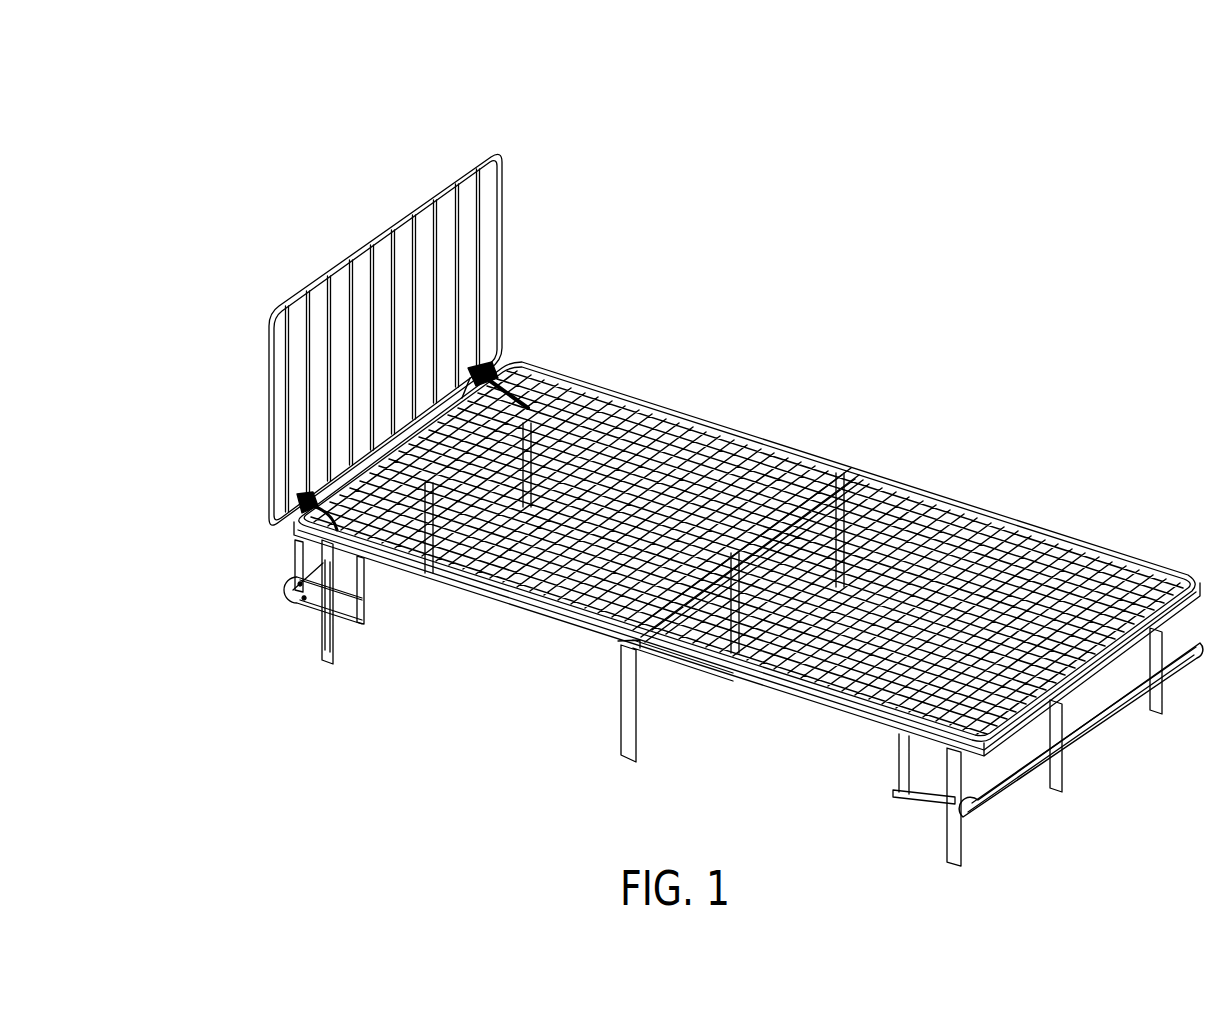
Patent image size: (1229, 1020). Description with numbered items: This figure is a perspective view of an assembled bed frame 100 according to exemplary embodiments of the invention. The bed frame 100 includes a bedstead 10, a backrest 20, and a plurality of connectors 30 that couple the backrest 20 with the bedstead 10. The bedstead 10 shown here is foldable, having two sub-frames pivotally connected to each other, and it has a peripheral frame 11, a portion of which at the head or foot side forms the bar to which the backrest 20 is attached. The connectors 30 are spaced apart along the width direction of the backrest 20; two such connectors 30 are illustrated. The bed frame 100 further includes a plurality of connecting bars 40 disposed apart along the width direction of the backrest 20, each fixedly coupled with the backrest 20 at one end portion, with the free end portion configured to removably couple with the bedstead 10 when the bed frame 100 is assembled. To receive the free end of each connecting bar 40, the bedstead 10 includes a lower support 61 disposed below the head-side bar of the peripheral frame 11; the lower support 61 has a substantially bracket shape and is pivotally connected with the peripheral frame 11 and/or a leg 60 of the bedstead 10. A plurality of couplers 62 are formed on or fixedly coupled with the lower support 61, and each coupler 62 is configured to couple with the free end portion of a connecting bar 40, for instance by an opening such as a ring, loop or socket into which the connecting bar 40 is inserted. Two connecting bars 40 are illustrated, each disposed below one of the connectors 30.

The bed frame 100 is at (248, 218).
The backrest 20 is at (497, 160).
The connector 30 is at (497, 352).
The connecting bar 40 is at (292, 574).
The peripheral frame 11 is at (623, 398).
The bedstead 10 is at (930, 480).
The leg 60 is at (337, 650).
The lower support 61 is at (318, 610).
The coupler 62 is at (292, 590).